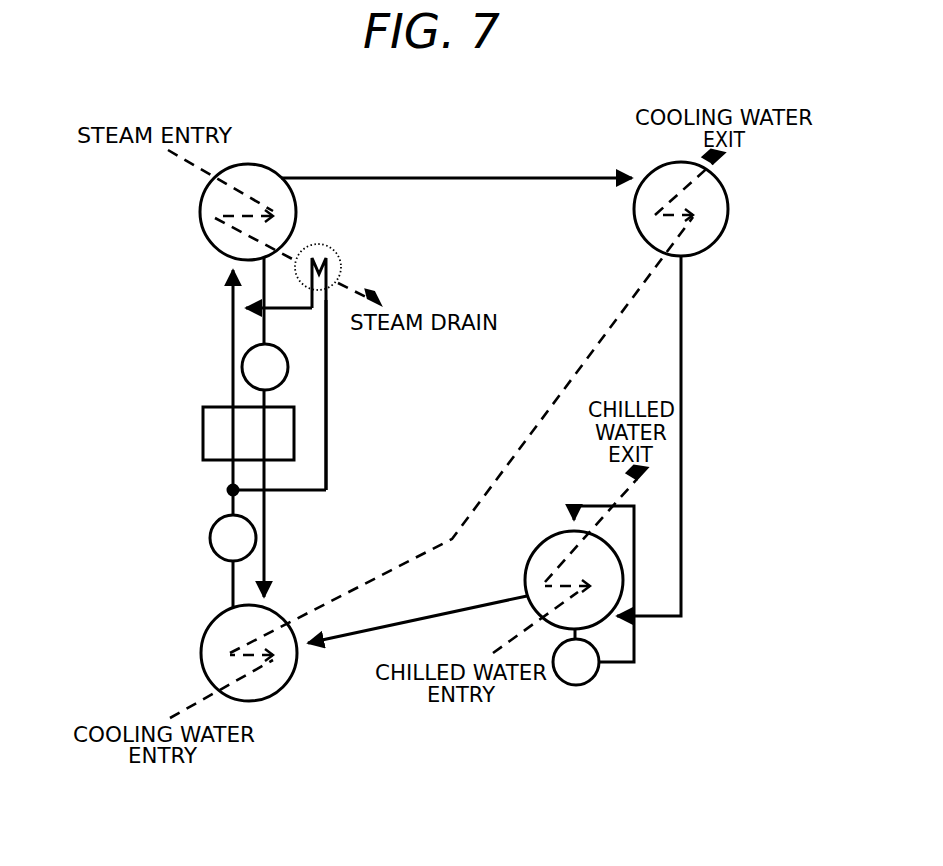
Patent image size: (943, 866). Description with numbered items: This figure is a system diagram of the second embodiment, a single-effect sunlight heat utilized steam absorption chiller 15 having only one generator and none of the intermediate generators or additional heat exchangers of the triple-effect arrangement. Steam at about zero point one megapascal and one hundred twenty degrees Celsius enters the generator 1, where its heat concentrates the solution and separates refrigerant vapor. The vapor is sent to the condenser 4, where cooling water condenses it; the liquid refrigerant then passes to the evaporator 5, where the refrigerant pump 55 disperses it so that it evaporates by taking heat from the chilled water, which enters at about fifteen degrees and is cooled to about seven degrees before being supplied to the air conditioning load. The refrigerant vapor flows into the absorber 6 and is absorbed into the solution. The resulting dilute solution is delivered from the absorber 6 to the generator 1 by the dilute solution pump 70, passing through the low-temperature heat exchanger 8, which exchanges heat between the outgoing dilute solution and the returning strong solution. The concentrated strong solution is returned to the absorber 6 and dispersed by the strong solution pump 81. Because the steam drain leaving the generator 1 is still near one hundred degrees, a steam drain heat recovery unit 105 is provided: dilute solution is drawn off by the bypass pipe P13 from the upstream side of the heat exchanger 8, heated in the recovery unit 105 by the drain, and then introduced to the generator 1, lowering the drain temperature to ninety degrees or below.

The absorption refrigerating machine 15 is at (122, 325).
The generator 1 is at (262, 166).
The steam drain heat recovery unit 105 is at (337, 253).
The bypass pipe P13 is at (326, 432).
The strong solution pump 81 is at (289, 367).
The low-temperature heat exchanger 8 is at (203, 428).
The dilute solution pump 70 is at (210, 538).
The absorber 6 is at (201, 653).
The condenser 4 is at (719, 238).
The evaporator 5 is at (540, 542).
The refrigerant pump 55 is at (578, 686).